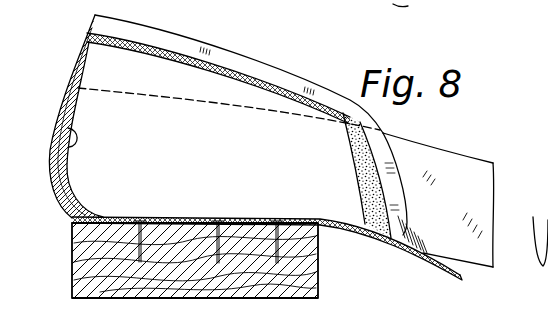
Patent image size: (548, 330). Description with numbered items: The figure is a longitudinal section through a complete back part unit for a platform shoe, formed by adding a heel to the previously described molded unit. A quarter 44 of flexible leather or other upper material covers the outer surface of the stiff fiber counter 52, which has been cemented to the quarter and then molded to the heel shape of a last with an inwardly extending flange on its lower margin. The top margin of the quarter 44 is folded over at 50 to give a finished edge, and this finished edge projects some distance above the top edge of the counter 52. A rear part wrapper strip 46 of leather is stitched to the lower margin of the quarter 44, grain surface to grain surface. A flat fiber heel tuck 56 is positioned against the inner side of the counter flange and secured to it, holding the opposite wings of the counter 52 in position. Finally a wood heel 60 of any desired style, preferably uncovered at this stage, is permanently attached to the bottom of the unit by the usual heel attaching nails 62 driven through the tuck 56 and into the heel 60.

The quarter 44 is at (347, 133).
The rear part wrapper strip 46 is at (62, 108).
The folded-over top margin 50 is at (228, 58).
The counter 52 is at (63, 150).
The heel tuck 56 is at (436, 276).
The wood heel 60 is at (318, 280).
The heel attaching nails 62 is at (217, 240).